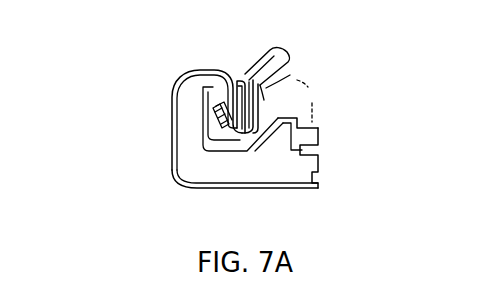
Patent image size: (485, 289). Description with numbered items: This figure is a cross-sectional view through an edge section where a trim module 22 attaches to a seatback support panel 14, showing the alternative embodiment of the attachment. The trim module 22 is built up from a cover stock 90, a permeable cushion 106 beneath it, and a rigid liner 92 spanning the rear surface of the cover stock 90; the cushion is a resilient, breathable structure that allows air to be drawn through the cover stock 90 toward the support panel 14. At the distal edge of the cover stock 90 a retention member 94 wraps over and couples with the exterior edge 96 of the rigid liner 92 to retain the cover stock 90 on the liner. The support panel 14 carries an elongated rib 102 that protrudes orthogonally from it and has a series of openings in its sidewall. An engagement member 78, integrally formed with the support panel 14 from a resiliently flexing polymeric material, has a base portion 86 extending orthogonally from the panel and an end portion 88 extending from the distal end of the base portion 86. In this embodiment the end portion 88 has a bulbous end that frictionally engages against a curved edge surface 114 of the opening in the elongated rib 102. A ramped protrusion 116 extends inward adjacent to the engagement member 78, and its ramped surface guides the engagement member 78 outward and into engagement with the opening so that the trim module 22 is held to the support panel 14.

The trim module 22 is at (104, 158).
The support panel 14 is at (262, 64).
The engagement member 78 is at (289, 107).
The base portion 86 is at (290, 76).
The end portion 88 is at (246, 130).
The cover stock 90 is at (197, 189).
The rigid liner 92 is at (296, 149).
The retention member 94 is at (222, 105).
The exterior edge 96 is at (224, 122).
The elongated rib 102 is at (236, 102).
The permeable cushion 106 is at (192, 160).
The curved edge surface 114 is at (213, 111).
The ramped protrusion 116 is at (297, 118).